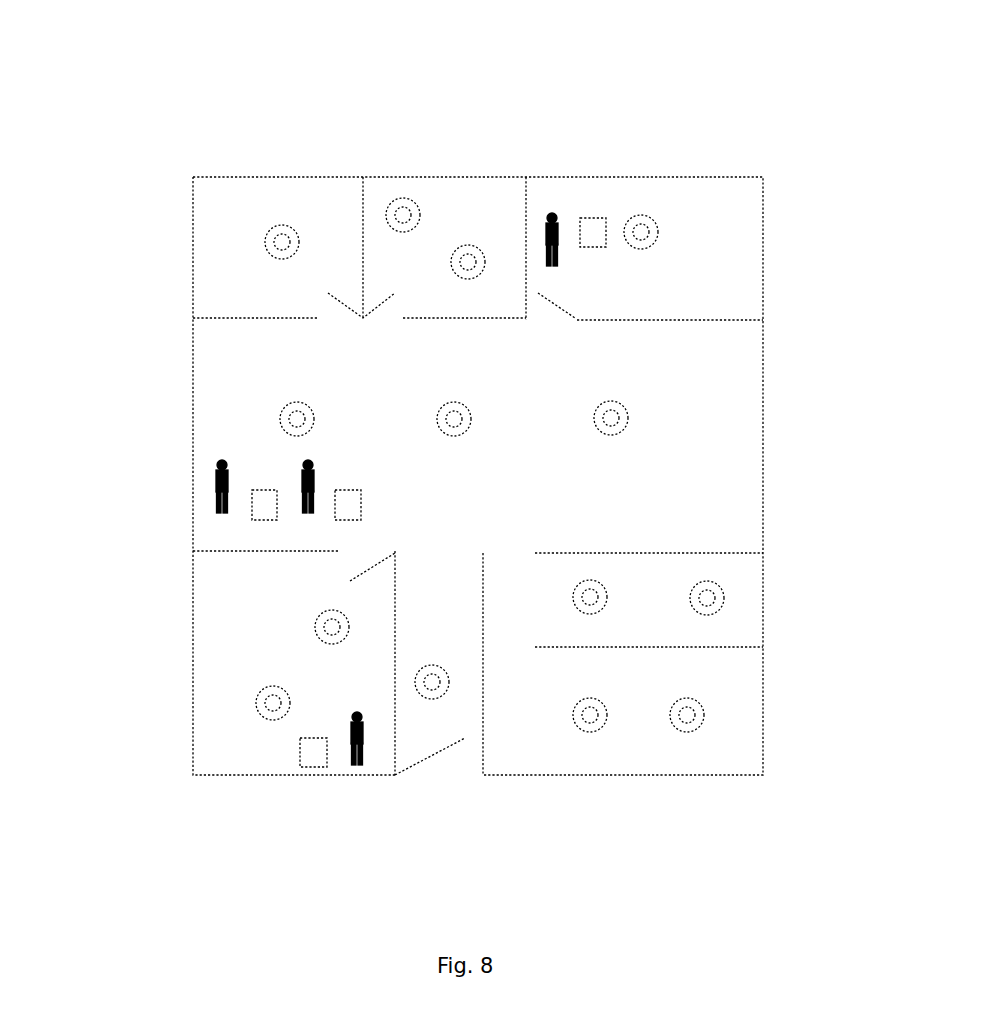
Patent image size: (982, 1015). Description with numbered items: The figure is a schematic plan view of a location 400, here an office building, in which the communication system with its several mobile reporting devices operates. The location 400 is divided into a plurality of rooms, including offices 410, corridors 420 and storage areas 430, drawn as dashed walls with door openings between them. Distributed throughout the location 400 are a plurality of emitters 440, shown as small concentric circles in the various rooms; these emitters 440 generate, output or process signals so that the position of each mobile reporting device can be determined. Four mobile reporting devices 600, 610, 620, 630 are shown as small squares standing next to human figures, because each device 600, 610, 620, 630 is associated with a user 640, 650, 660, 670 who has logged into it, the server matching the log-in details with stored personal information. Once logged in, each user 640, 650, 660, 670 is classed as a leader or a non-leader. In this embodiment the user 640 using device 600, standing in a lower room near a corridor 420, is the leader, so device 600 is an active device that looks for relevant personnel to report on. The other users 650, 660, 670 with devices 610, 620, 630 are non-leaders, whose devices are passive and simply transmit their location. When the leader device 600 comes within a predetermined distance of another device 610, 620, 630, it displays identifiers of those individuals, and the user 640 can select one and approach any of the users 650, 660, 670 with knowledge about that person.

The location 400 is at (413, 169).
The offices 410 is at (262, 285).
The corridors 420 is at (449, 642).
The storage areas 430 is at (702, 287).
The emitters 440 is at (281, 223).
The mobile reporting device 600 is at (296, 772).
The mobile reporting device 610 is at (249, 517).
The mobile reporting device 620 is at (364, 507).
The mobile reporting device 630 is at (594, 214).
The user 640 is at (349, 775).
The user 650 is at (212, 477).
The user 660 is at (315, 460).
The user 670 is at (562, 250).